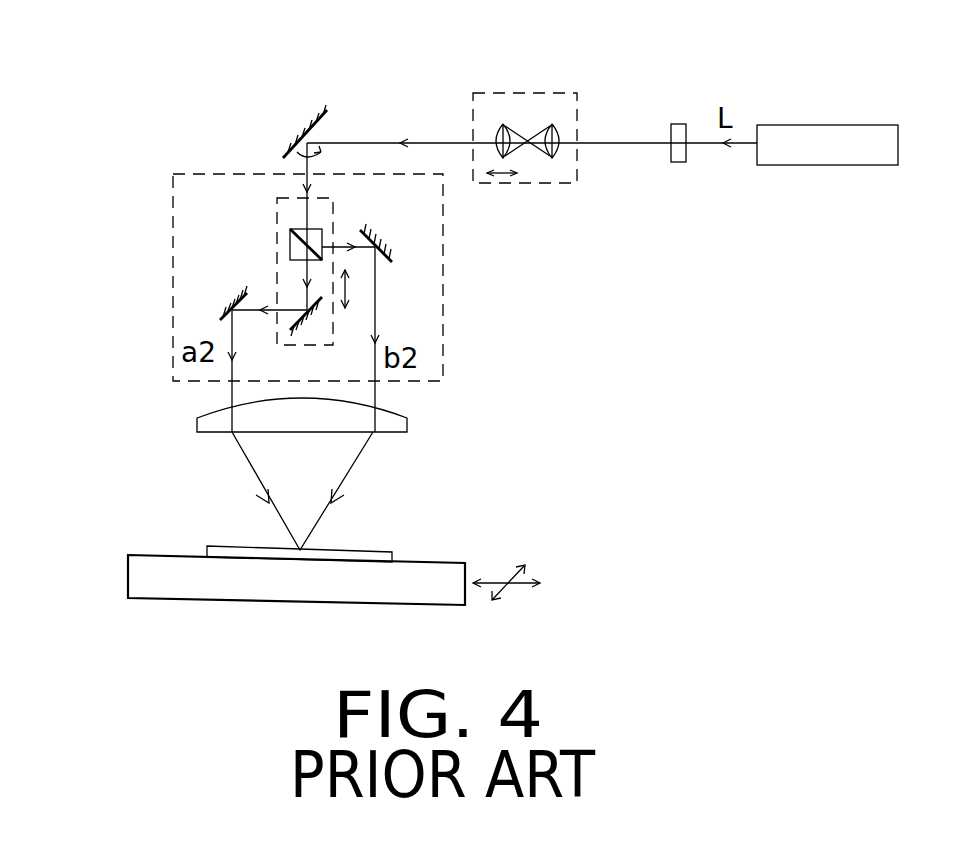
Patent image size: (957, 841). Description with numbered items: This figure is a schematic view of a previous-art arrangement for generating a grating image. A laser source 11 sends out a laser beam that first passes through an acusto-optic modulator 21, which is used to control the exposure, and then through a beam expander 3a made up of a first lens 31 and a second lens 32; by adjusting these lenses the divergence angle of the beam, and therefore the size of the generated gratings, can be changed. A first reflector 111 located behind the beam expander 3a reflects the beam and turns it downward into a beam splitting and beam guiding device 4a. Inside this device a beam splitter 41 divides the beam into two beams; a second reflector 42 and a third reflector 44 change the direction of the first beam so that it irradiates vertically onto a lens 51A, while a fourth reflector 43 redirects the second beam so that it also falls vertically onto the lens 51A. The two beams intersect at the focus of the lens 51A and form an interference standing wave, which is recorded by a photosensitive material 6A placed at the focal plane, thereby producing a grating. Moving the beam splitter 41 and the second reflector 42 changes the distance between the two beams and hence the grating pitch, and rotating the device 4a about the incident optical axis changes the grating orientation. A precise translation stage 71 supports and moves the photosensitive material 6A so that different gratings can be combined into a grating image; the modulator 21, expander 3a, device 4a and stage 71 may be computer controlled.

The laser source 11 is at (805, 165).
The acusto-optic modulator 21 is at (676, 124).
The beam expander 3a is at (522, 100).
The first lens 31 is at (493, 130).
The second lens 32 is at (560, 127).
The first reflector 111 is at (325, 120).
The beam splitting and beam guiding device 4a is at (283, 277).
The beam splitter 41 is at (290, 238).
The second reflector 42 is at (298, 322).
The fourth reflector 43 is at (392, 262).
The third reflector 44 is at (218, 322).
The lens 51A is at (400, 423).
The photosensitive material 6A is at (377, 552).
The precise translation stage 71 is at (203, 597).